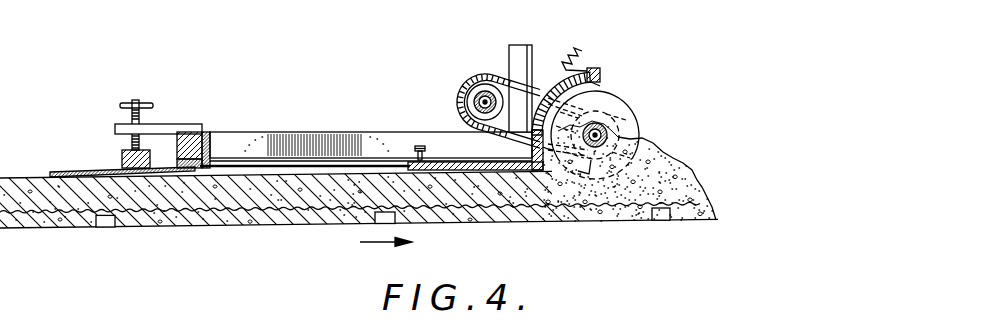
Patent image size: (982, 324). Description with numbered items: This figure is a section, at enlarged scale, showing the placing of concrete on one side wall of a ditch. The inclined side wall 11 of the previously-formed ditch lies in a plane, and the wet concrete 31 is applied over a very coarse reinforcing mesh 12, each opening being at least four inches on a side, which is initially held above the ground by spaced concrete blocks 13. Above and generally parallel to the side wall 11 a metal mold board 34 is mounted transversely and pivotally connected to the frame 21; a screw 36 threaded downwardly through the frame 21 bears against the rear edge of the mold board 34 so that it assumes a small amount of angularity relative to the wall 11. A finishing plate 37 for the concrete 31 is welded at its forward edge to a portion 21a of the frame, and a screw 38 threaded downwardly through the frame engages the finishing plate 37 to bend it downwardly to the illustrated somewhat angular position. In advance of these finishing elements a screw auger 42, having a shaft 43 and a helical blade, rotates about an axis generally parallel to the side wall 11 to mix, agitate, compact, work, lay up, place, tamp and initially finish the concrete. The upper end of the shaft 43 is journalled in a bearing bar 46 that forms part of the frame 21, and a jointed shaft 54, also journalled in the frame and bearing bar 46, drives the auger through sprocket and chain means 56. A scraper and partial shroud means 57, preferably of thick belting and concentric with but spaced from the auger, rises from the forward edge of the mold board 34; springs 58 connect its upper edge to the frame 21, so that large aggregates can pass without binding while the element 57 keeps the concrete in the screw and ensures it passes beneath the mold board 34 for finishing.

The inclined side of the ditch 11 is at (240, 223).
The reinforcing mesh 12 is at (182, 213).
The concrete block 13 is at (108, 228).
The frame 21 is at (310, 137).
The frame portion 21a is at (208, 144).
The wet concrete 31 is at (307, 197).
The mold board 34 is at (513, 168).
The screw 36 is at (430, 124).
The finishing plate 37 is at (92, 172).
The screw 38 is at (140, 111).
The screw auger 42 is at (646, 107).
The shaft 43 is at (607, 132).
The bearing bar 46 is at (537, 112).
The jointed shaft 54 is at (481, 97).
The sprocket and chain means 56 is at (462, 81).
The scraper and partial shroud means 57 is at (600, 86).
The spring 58 is at (582, 51).